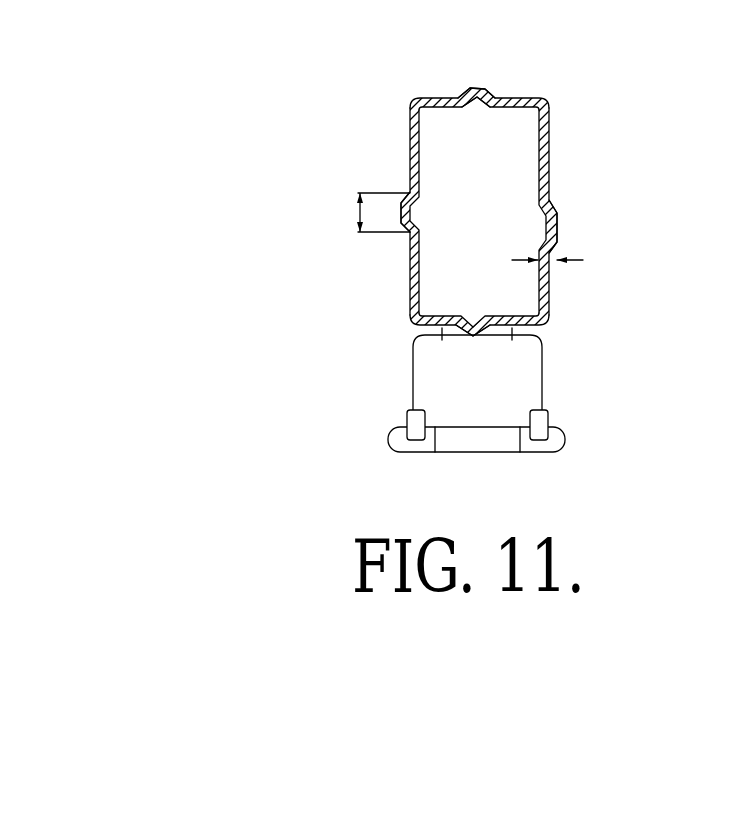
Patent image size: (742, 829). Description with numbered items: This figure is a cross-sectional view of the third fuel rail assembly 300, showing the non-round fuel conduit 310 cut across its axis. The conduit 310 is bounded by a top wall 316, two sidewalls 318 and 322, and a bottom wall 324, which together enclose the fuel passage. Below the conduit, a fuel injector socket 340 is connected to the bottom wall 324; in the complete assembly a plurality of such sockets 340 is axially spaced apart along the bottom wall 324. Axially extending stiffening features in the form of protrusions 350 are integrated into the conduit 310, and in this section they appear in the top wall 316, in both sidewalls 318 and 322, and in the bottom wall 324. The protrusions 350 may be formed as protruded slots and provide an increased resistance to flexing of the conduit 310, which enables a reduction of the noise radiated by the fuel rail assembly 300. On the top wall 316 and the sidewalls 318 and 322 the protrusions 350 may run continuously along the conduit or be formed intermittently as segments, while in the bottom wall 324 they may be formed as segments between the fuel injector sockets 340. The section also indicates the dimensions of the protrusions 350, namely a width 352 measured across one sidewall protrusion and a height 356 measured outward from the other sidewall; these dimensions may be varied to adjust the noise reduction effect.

The third fuel rail assembly 300 is at (623, 474).
The fuel conduit 310 is at (536, 93).
The top wall 316 is at (430, 97).
The sidewall 318 is at (549, 146).
The sidewall 322 is at (410, 138).
The bottom wall 324 is at (420, 333).
The fuel injector socket 340 is at (506, 407).
The protrusion 350 is at (478, 88).
The width 352 is at (359, 213).
The height 356 is at (553, 262).